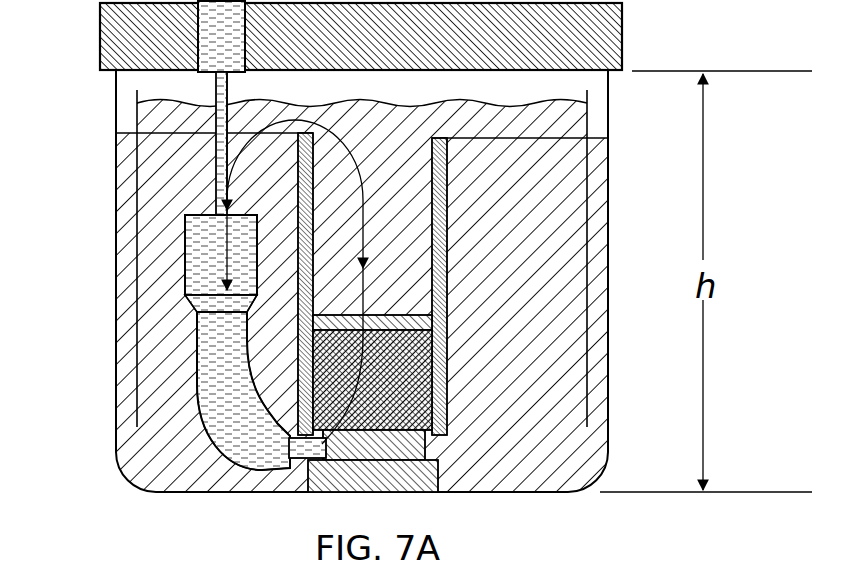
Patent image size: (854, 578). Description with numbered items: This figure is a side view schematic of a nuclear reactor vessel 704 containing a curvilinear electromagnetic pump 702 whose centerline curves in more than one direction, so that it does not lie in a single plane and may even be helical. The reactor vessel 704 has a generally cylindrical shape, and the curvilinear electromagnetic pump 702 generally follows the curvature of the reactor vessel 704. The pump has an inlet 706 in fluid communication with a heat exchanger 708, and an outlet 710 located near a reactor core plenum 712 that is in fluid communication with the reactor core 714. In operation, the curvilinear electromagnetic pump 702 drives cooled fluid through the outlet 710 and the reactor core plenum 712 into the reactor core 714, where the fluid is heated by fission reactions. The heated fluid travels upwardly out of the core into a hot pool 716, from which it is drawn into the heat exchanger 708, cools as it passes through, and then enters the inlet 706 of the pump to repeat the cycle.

The curvilinear electromagnetic pump 702 is at (223, 397).
The reactor vessel 704 is at (607, 175).
The inlet 706 is at (197, 305).
The heat exchanger 708 is at (203, 248).
The outlet 710 is at (287, 470).
The reactor core plenum 712 is at (437, 491).
The reactor core 714 is at (377, 358).
The hot pool 716 is at (418, 156).